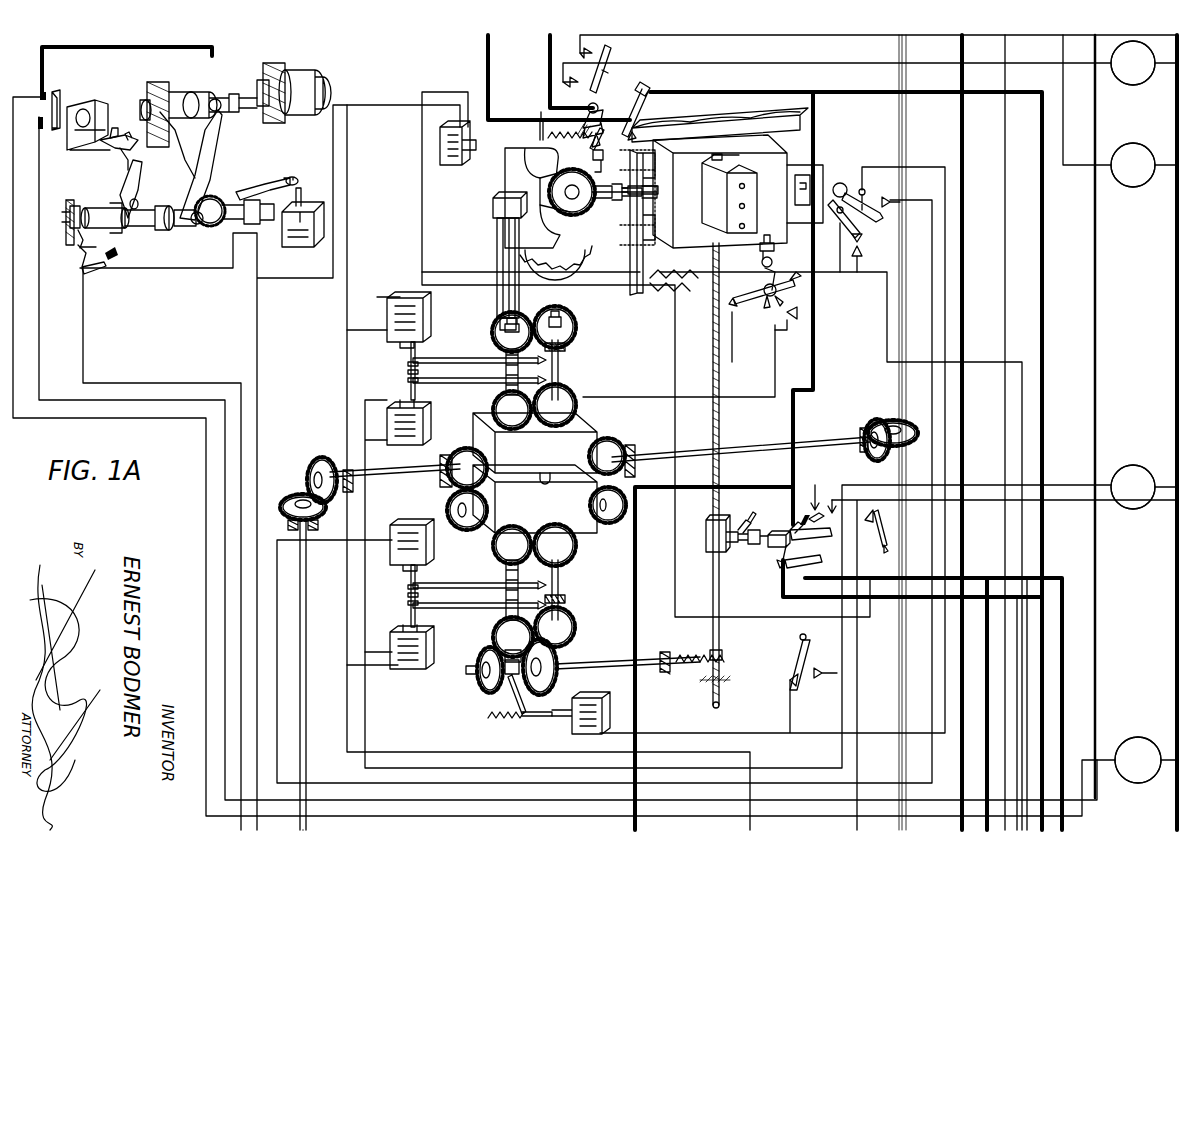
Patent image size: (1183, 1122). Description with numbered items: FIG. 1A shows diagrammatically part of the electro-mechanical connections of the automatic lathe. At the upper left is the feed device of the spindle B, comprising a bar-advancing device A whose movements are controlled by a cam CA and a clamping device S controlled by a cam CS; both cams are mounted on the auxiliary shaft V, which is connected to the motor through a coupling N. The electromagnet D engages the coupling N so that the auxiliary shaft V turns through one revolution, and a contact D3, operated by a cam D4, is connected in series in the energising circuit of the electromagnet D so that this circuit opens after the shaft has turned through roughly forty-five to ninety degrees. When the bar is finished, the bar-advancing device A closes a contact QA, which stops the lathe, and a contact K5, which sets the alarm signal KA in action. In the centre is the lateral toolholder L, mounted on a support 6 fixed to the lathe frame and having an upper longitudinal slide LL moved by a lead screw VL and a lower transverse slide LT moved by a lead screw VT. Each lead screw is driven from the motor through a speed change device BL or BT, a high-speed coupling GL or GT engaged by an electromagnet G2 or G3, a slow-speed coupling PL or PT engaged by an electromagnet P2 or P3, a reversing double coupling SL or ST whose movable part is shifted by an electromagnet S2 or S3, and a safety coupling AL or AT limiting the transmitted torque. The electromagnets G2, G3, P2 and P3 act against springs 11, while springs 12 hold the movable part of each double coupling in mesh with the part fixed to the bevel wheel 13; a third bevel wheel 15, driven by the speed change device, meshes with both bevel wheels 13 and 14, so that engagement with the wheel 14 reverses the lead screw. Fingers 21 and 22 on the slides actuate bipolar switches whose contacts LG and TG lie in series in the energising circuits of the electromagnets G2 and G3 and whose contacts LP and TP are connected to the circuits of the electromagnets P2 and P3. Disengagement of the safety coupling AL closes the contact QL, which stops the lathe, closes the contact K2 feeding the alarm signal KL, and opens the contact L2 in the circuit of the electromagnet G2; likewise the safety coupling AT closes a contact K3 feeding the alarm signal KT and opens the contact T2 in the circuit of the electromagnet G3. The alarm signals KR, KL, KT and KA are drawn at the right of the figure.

The contact K5 is at (40, 92).
The bar-advancing device A is at (100, 103).
The clamping device S is at (188, 88).
The spindle B is at (292, 75).
The contact QA is at (43, 132).
The cam D4 is at (102, 206).
The auxiliary shaft V is at (73, 245).
The cam CA is at (113, 220).
The cam CS is at (197, 222).
The coupling N is at (218, 212).
The electromagnet D is at (300, 205).
The contact D3 is at (100, 268).
The contact QL is at (600, 53).
The contact K2 is at (583, 112).
The contact L2 is at (650, 92).
The spring 12 is at (553, 128).
The electromagnet S2 is at (462, 162).
The upper longitudinal slide LL is at (742, 150).
The lower transverse slide LT is at (808, 130).
The contact TP is at (876, 193).
The lead screw VL is at (660, 190).
The lateral toolholder L is at (750, 218).
The reversing coupling SL is at (572, 214).
The safety coupling AL is at (618, 222).
The support 6 is at (664, 222).
The finger 21 is at (764, 262).
The finger 22 is at (840, 223).
The contact TG is at (855, 235).
The contact LP is at (792, 300).
The lead screw VT is at (712, 305).
The contact LG is at (762, 300).
The electromagnet G2 is at (427, 325).
The coupling GL is at (505, 362).
The spring 11 is at (412, 371).
The coupling PL is at (505, 380).
The electromagnet P2 is at (428, 428).
The speed change device BL is at (535, 443).
The speed change device BT is at (535, 499).
The alarm signal KT is at (820, 476).
The contact K3 is at (800, 512).
The contact T2 is at (800, 540).
The safety coupling AT is at (708, 548).
The electromagnet P3 is at (428, 558).
The coupling PT is at (508, 574).
The coupling GT is at (506, 600).
The third bevel wheel 15 is at (495, 636).
The bevel wheel 13 is at (560, 660).
The electromagnet G3 is at (416, 670).
The bevel wheel 14 is at (485, 682).
The reversing coupling ST is at (512, 690).
The electromagnet S3 is at (588, 728).
The alarm signal KL is at (1133, 63).
The alarm signal KR is at (1133, 165).
The alarm signal KA is at (1138, 760).